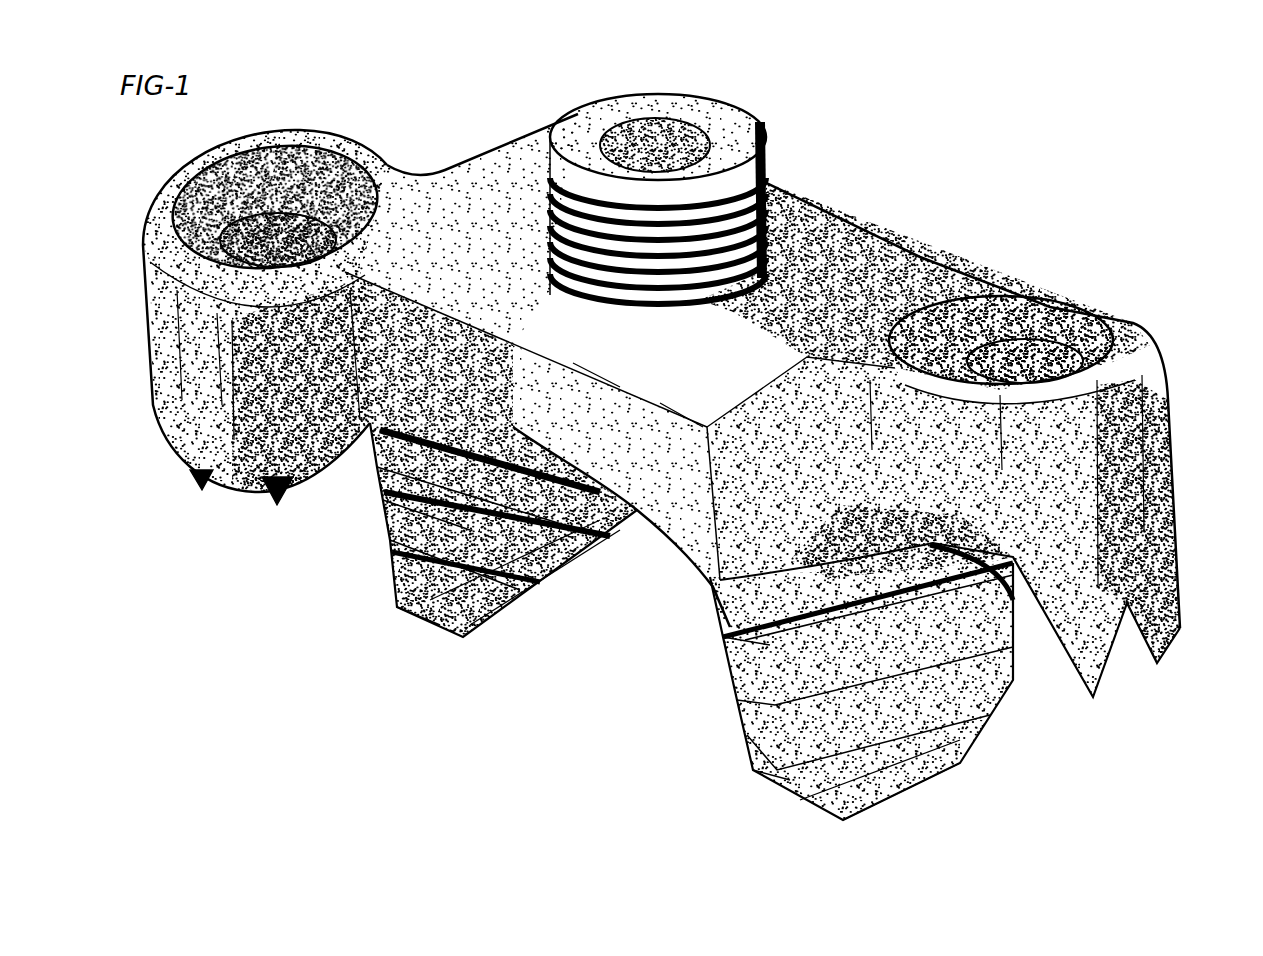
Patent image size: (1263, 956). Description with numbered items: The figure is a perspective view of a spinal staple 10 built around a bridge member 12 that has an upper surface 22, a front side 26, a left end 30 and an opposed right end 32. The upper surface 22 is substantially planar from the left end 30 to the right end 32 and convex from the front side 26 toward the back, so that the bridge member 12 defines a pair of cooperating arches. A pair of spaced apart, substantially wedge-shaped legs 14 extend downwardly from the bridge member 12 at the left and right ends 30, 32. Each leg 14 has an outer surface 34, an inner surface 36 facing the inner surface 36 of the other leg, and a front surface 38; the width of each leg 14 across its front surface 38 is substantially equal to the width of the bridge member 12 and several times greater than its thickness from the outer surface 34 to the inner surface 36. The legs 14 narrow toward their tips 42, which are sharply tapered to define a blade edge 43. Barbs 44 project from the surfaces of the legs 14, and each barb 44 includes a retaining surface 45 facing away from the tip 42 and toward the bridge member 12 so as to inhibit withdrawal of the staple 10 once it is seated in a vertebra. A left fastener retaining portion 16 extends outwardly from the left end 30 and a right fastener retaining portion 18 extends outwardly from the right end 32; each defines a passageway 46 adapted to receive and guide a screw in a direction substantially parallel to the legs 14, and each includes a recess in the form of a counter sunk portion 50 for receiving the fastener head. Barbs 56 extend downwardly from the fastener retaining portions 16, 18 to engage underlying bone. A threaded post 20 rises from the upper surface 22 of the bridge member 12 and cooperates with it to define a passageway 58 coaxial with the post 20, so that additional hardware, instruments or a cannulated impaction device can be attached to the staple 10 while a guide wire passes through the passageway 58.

The spinal staple 10 is at (950, 155).
The bridge member 12 is at (883, 248).
The legs 14 is at (397, 535).
The left fastener retaining portion 16 is at (167, 377).
The right fastener retaining portion 18 is at (1170, 460).
The threaded post 20 is at (727, 128).
The upper surface 22 is at (515, 190).
The front side 26 is at (687, 523).
The left end 30 is at (452, 193).
The right end 32 is at (933, 271).
The outer surface 34 is at (1010, 680).
The inner surface 36 is at (570, 593).
The front surface 38 is at (388, 580).
The tips 42 is at (477, 595).
The blade edge 43 is at (523, 613).
The barbs 44 is at (403, 607).
The retaining surface 45 is at (430, 503).
The passageway 46 is at (260, 242).
The counter sunk portion 50 is at (284, 166).
The barbs 56 is at (1165, 628).
The passageway 58 is at (647, 157).